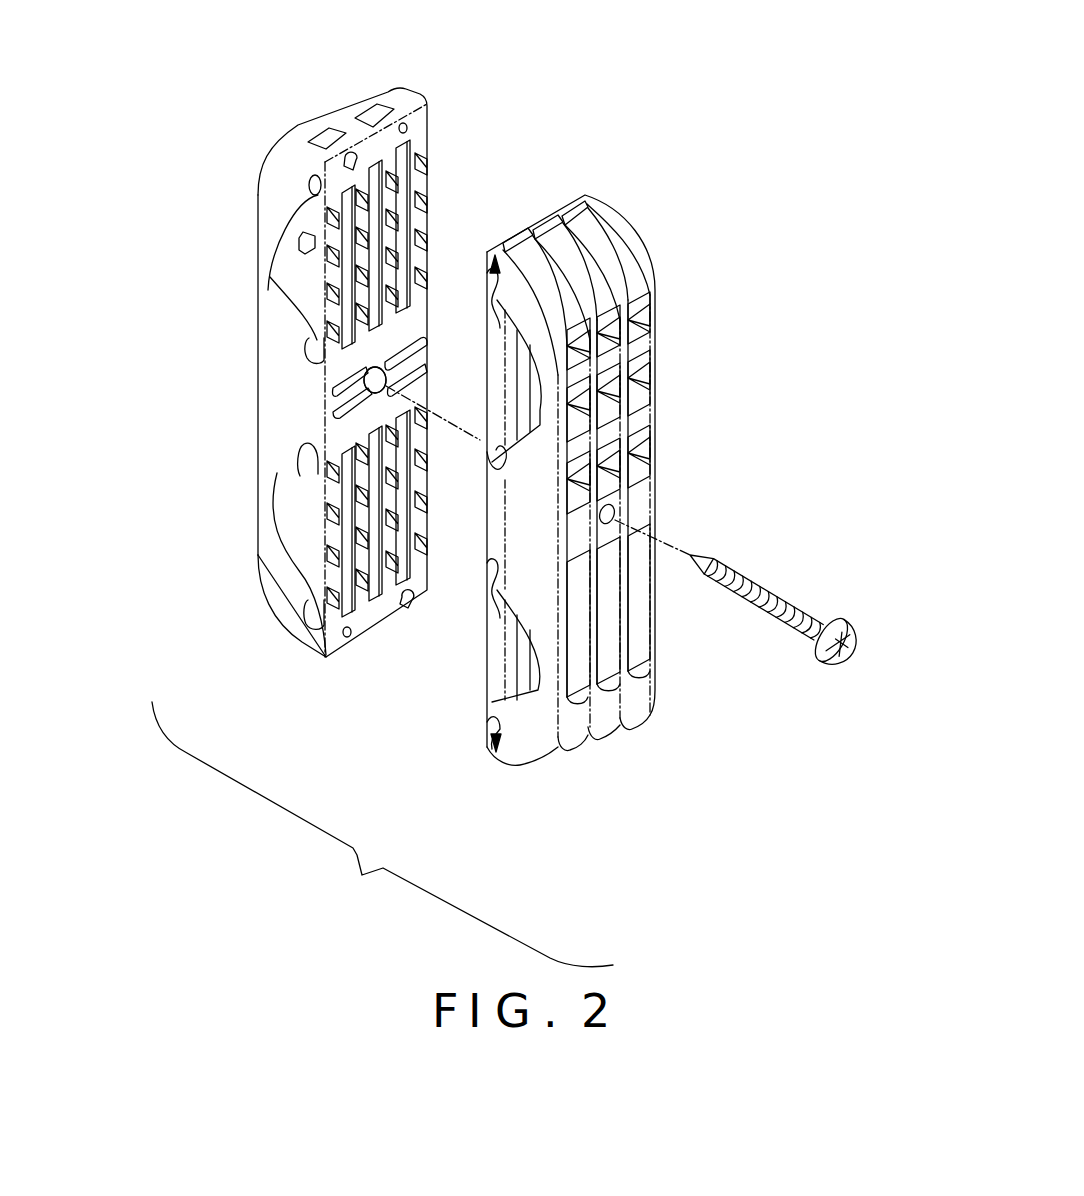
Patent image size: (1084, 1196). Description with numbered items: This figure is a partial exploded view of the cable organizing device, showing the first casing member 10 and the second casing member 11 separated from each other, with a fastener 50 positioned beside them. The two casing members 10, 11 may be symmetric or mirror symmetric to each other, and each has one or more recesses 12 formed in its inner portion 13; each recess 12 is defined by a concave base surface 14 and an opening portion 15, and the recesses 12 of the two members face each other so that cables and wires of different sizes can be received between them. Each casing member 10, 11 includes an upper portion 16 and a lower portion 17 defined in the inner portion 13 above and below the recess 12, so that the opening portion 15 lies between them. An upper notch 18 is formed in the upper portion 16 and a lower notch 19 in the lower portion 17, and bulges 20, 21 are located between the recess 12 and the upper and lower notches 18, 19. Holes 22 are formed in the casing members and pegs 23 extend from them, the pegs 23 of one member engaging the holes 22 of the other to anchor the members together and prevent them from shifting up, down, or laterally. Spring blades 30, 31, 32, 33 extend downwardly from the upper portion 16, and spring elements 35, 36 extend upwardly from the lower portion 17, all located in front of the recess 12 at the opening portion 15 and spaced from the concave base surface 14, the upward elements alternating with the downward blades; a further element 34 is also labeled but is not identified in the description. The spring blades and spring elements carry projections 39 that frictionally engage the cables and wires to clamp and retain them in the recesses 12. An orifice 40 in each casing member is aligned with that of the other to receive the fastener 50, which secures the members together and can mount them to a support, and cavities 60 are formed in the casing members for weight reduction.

The first casing member 10 is at (297, 618).
The second casing member 11 is at (538, 740).
The recess 12 is at (277, 283).
The inner portion 13 is at (410, 328).
The concave base surface 14 is at (285, 570).
The opening portion 15 is at (494, 752).
The upper portion 16 is at (495, 262).
The lower portion 17 is at (503, 462).
The upper notch 18 is at (498, 290).
The lower notch 19 is at (495, 432).
The bulge 20 is at (309, 188).
The bulge 21 is at (312, 342).
The hole 22 is at (350, 640).
The peg 23 is at (408, 602).
The spring blade 30 is at (304, 240).
The spring blade 31 is at (357, 180).
The spring blade 32 is at (385, 180).
The spring blade 33 is at (424, 148).
The cross rib 34 is at (340, 380).
The spring element 35 is at (345, 400).
The spring element 36 is at (418, 305).
The projection 39 is at (421, 190).
The orifice 40 is at (615, 515).
The fastener 50 is at (770, 590).
The cavity 60 is at (582, 253).